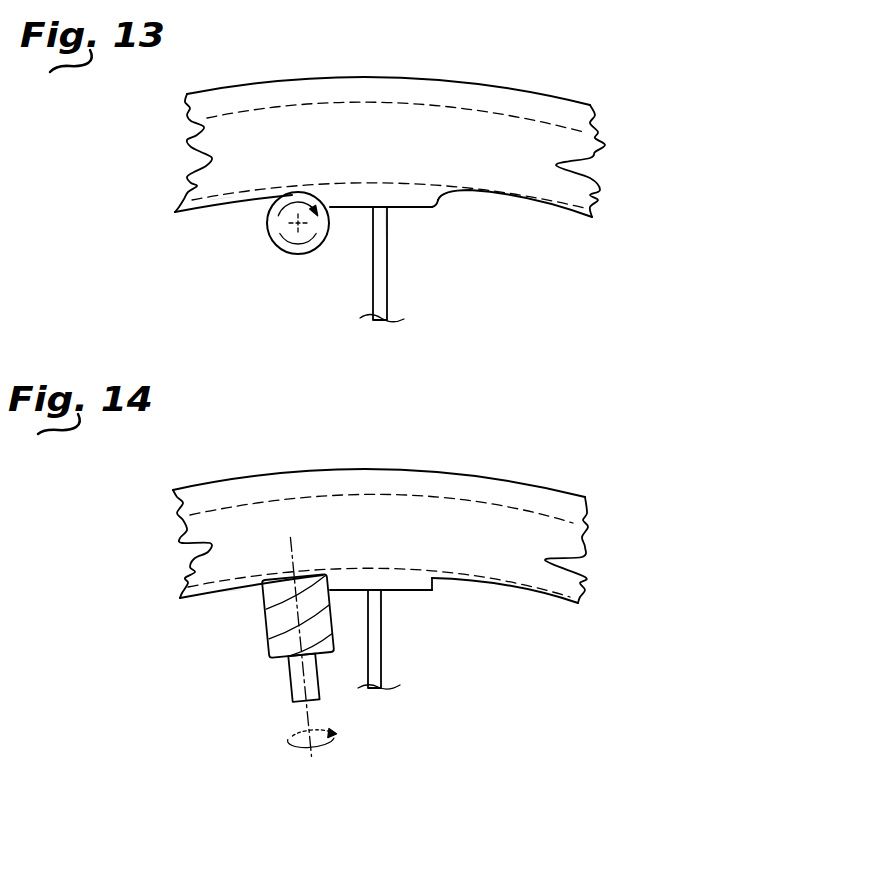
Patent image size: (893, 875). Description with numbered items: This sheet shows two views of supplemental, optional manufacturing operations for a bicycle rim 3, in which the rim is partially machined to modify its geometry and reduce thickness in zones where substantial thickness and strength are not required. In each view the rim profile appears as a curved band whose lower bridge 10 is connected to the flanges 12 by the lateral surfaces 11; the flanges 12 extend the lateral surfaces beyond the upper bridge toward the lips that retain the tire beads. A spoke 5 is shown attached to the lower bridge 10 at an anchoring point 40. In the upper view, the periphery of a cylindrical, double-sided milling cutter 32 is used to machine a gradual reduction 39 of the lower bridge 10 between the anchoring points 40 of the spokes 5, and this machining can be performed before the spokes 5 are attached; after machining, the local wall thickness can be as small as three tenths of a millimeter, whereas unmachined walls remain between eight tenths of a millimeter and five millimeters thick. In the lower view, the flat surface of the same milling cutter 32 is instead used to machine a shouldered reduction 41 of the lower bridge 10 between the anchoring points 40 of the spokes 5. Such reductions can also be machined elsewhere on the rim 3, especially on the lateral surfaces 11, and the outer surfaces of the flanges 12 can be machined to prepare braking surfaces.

In FIG. 13, the ring body 3 is at (538, 88).
In FIG. 14, the ring body 3 is at (436, 468).
In FIG. 13, the spokes 5 is at (372, 290).
In FIG. 14, the spokes 5 is at (375, 660).
In FIG. 13, the lower bridge 10 is at (435, 203).
In FIG. 14, the lower bridge 10 is at (403, 587).
In FIG. 13, the lateral surfaces 11 is at (262, 147).
In FIG. 14, the lateral surfaces 11 is at (525, 538).
In FIG. 13, the flanges 12 is at (294, 103).
In FIG. 14, the flanges 12 is at (500, 497).
In FIG. 13, the milling cutter 32 is at (270, 238).
In FIG. 14, the milling cutter 32 is at (270, 638).
In FIG. 13, the gradual reduction 39 is at (228, 205).
In FIG. 13, the anchoring points 40 is at (395, 219).
In FIG. 14, the anchoring points 40 is at (389, 603).
In FIG. 14, the shouldered reduction 41 is at (226, 590).